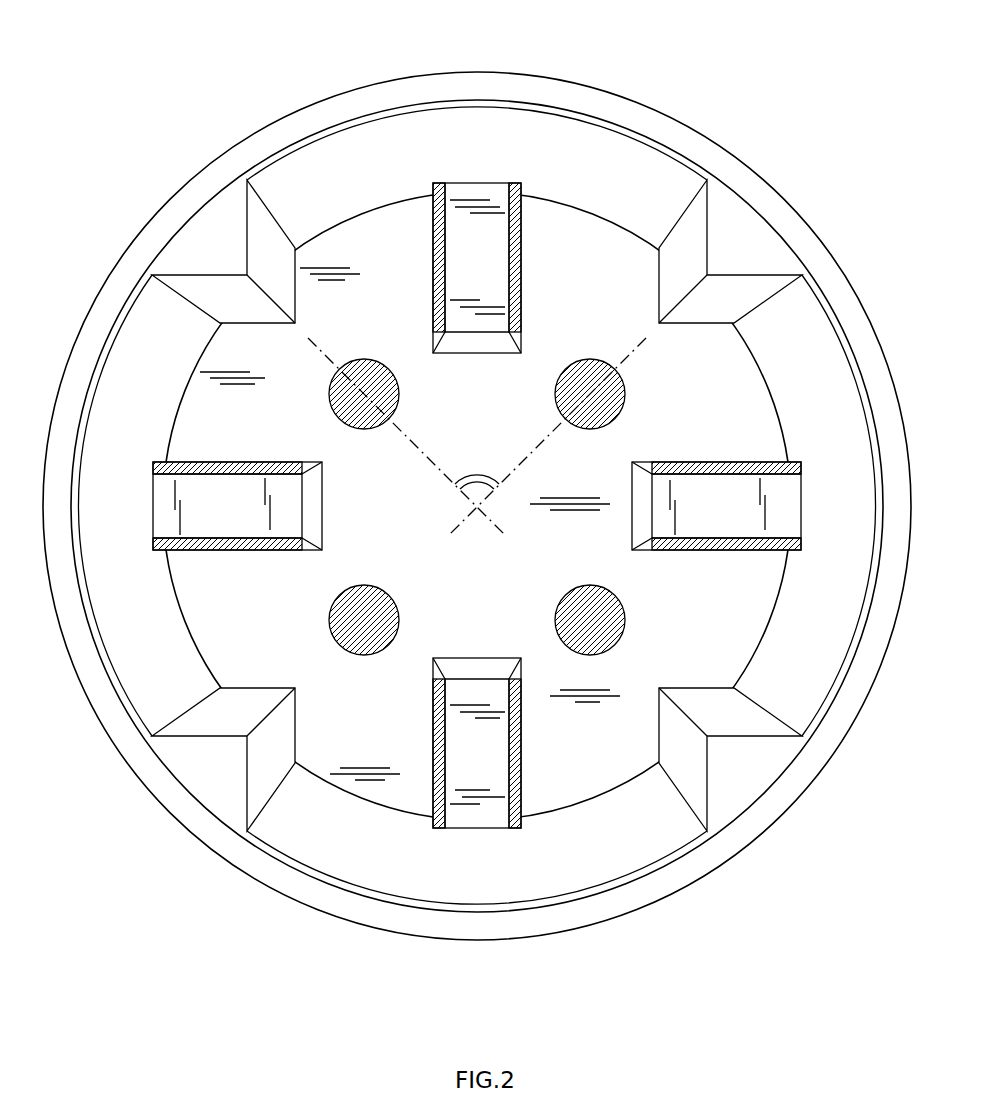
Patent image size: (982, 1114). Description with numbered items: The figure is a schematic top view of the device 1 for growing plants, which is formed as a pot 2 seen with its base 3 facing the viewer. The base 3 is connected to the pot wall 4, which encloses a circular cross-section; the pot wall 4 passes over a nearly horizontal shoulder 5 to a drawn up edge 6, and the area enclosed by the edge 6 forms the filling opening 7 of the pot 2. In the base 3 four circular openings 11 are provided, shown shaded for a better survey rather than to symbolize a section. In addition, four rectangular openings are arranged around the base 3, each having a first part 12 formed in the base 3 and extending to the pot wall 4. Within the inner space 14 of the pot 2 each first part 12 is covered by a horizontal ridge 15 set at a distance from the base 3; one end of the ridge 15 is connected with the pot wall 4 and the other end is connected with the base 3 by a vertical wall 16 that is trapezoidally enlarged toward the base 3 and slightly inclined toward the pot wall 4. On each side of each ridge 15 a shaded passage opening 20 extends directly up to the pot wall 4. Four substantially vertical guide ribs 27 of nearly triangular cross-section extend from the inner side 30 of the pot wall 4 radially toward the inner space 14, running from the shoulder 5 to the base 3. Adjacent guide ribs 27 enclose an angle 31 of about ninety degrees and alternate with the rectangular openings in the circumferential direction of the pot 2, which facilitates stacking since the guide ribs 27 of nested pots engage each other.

The device 1 is at (278, 104).
The pot 2 is at (457, 128).
The base 3 is at (438, 584).
The pot wall 4 is at (600, 847).
The shoulder 5 is at (660, 866).
The edge 6 is at (560, 924).
The filling opening 7 is at (632, 163).
The openings 11 is at (362, 360).
The first part 12 is at (521, 288).
The inner space 14 is at (222, 646).
The ridge 15 is at (493, 276).
The wall 16 is at (462, 340).
The passage opening 20 is at (433, 258).
The guide ribs 27 is at (262, 248).
The inner side 30 is at (145, 320).
The angle 31 is at (484, 478).